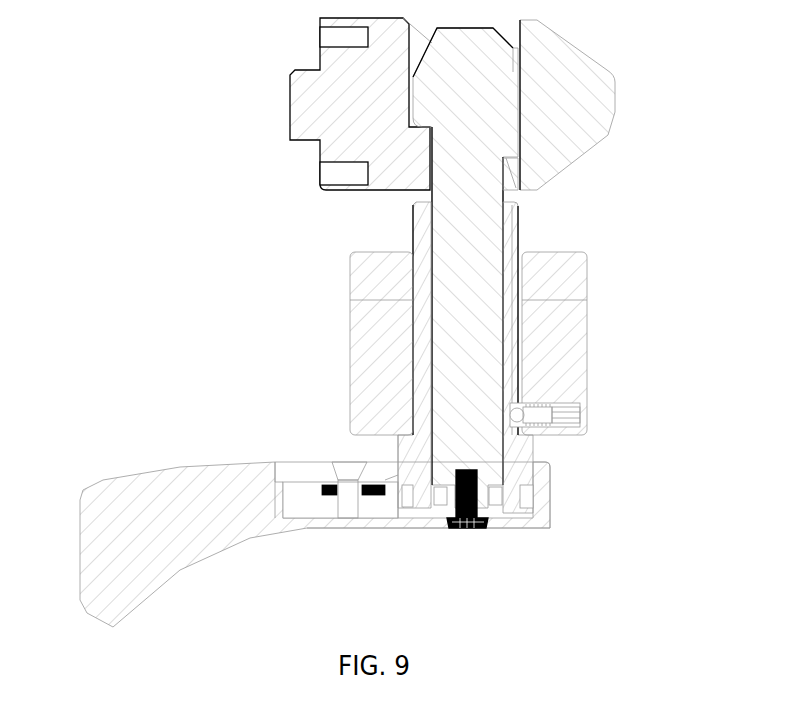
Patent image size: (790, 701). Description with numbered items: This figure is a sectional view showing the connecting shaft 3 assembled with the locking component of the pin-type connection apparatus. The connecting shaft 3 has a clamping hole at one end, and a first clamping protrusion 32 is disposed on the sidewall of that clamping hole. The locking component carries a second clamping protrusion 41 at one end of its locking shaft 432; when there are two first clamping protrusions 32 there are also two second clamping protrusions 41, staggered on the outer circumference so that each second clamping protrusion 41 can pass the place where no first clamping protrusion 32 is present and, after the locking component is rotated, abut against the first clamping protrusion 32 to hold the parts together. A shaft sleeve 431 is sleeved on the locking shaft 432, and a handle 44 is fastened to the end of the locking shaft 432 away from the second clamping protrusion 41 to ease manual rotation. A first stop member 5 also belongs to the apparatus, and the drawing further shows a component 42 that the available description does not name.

The connecting shaft 3 is at (587, 98).
The first clamping protrusion 32 is at (508, 164).
The second clamping protrusion 41 is at (424, 96).
The clamping block 42 is at (560, 348).
The shaft sleeve 431 is at (507, 235).
The locking shaft 432 is at (455, 241).
The handle 44 is at (197, 493).
The first stop member 5 is at (538, 415).